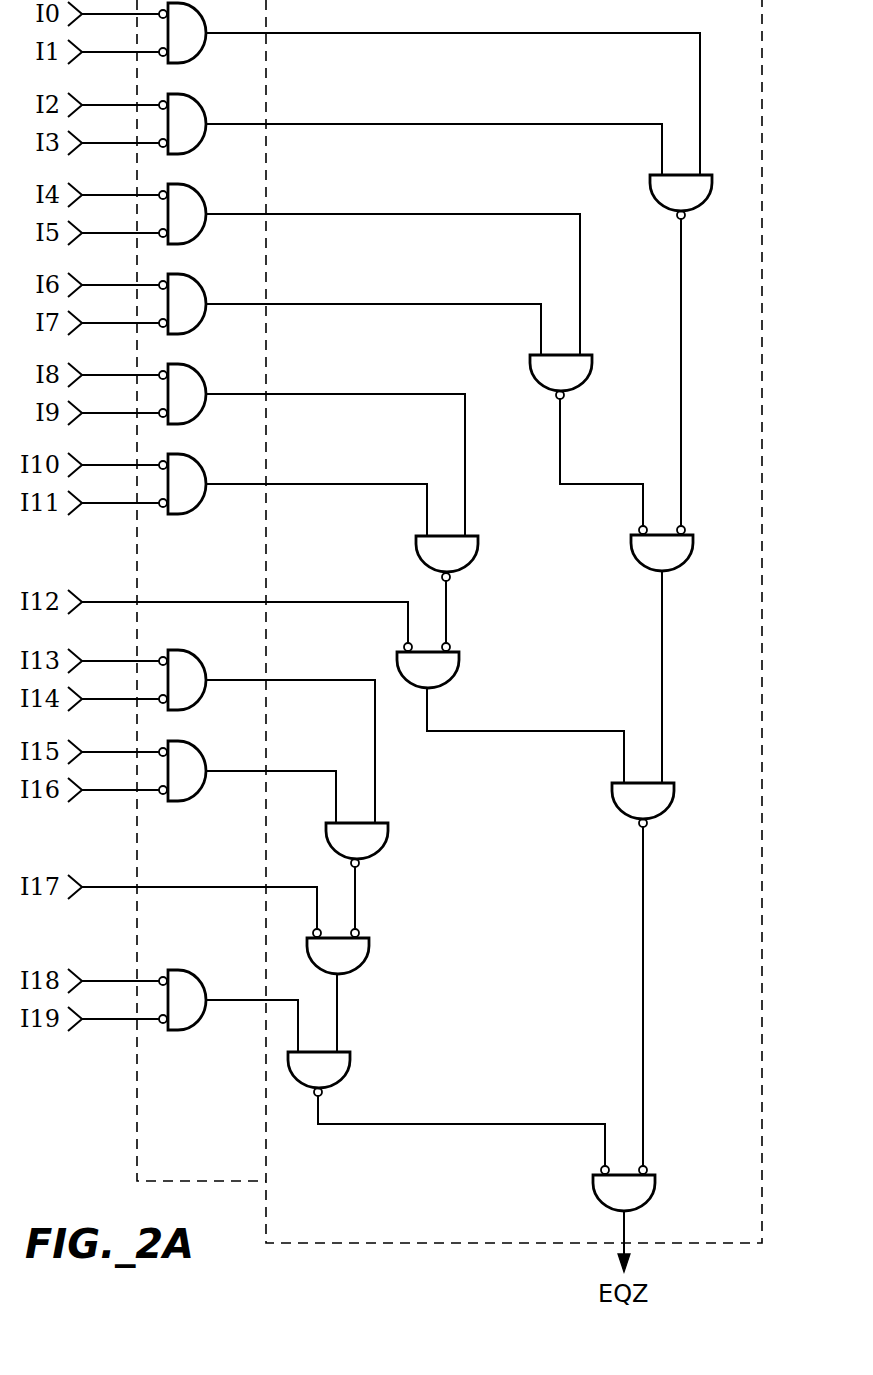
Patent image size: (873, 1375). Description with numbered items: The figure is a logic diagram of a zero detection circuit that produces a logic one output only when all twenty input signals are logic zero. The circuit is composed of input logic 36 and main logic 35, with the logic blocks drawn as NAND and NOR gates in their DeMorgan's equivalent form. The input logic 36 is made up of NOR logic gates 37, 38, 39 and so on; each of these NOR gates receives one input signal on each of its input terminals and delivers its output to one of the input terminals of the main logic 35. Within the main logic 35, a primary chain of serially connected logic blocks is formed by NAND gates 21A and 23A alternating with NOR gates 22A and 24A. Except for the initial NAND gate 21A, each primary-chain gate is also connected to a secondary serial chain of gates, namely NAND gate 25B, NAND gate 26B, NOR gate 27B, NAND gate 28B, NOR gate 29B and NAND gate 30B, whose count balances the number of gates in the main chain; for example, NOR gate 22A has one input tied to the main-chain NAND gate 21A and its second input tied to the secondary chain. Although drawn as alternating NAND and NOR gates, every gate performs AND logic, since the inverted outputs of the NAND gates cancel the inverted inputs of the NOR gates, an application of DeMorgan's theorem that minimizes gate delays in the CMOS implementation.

The NOR logic gate 37 is at (189, 41).
The NOR logic gate 38 is at (189, 132).
The NOR logic gate 39 is at (189, 222).
The NAND gate 21A is at (686, 193).
The NOR gate 22A is at (668, 553).
The NAND gate 23A is at (648, 801).
The NOR gate 24A is at (630, 1193).
The NAND gate 25B is at (566, 373).
The NAND gate 26B is at (452, 554).
The NOR gate 27B is at (433, 670).
The NAND gate 28B is at (362, 841).
The NOR gate 29B is at (343, 956).
The NAND gate 30B is at (324, 1070).
The main logic 35 is at (450, 1219).
The input logic 36 is at (214, 1152).